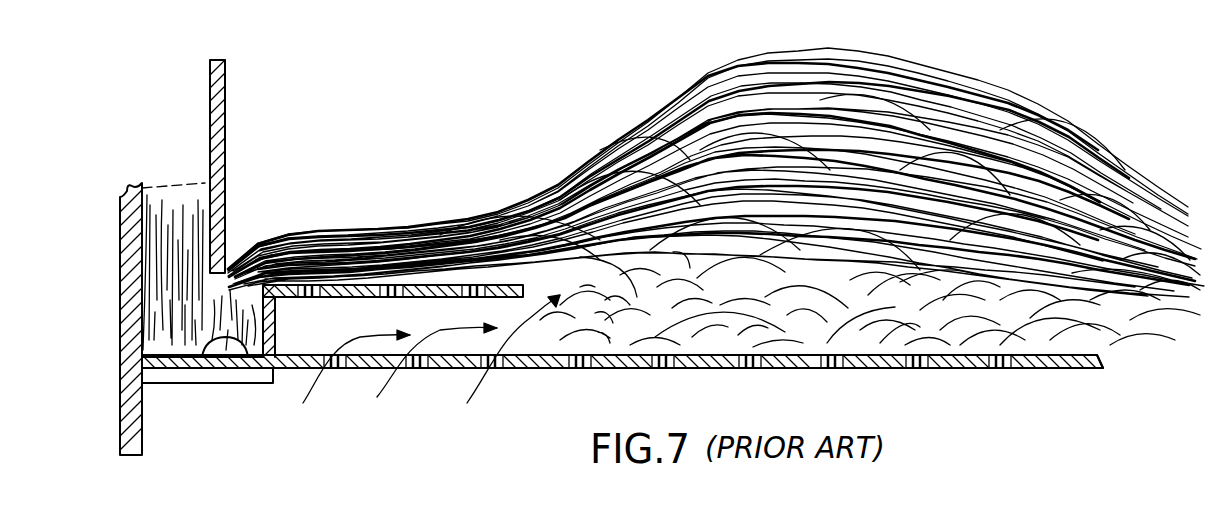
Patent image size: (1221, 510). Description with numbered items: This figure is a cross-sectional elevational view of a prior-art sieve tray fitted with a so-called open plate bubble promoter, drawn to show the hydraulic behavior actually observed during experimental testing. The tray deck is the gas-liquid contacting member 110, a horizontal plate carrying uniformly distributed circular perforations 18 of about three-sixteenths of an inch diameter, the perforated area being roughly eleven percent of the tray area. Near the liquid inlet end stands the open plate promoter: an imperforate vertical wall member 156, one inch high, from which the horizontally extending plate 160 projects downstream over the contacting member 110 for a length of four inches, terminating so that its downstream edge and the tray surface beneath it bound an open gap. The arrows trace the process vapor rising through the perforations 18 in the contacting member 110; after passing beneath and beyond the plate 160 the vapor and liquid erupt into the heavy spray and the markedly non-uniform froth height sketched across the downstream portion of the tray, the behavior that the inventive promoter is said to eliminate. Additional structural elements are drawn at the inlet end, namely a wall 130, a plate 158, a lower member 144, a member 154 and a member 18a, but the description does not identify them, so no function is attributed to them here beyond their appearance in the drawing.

The back wall 130 is at (125, 313).
The baffle plate 158 is at (227, 85).
The imperforate vertical wall member 156 is at (277, 325).
The horizontally extending plate 160 is at (338, 298).
The upper plate 18a is at (453, 313).
The lower flange 144 is at (184, 378).
The pilot burner 154 is at (248, 357).
The perforations 18 is at (640, 386).
The gas-liquid contacting member 110 is at (1042, 368).